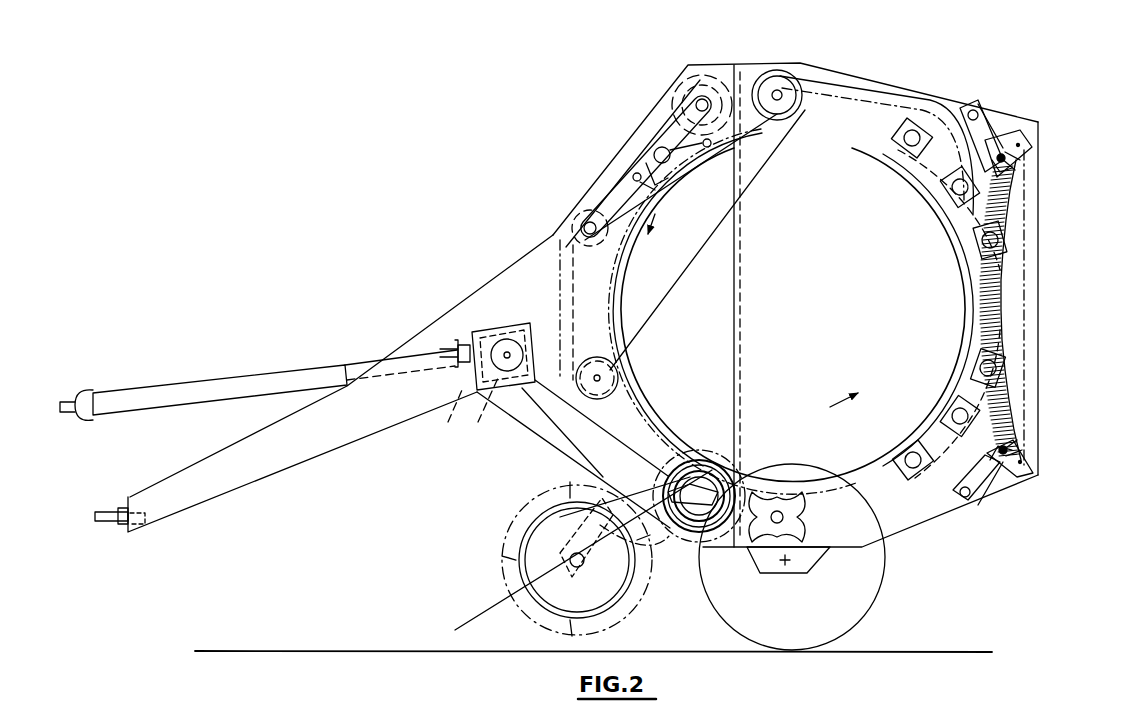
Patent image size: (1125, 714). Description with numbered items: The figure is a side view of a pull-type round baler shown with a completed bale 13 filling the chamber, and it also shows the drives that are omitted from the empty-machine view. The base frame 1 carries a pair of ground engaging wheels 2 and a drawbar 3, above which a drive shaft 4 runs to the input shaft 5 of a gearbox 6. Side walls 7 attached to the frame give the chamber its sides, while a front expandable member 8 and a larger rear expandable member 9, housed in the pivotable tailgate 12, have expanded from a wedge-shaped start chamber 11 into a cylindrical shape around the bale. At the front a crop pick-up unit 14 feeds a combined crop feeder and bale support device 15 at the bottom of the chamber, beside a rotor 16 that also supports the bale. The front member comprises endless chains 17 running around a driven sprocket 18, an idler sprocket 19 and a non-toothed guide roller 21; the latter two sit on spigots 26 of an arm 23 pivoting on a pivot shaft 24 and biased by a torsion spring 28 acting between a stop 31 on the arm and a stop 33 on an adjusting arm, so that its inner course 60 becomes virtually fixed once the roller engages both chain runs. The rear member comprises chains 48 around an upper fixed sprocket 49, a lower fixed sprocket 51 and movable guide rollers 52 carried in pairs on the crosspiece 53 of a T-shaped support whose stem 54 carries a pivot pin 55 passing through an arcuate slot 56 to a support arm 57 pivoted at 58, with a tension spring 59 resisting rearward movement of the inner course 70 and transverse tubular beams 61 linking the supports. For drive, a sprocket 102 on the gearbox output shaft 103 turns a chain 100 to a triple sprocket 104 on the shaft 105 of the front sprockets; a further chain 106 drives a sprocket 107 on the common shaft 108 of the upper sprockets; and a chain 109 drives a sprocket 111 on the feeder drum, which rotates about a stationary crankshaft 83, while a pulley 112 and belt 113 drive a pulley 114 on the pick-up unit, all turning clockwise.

The base frame 1 is at (902, 554).
The ground engaging wheels 2 is at (862, 605).
The drawbar 3 is at (350, 435).
The drive shaft 4 is at (240, 378).
The input shaft 5 is at (448, 421).
The gearbox 6 is at (480, 415).
The side walls 7 is at (738, 72).
The front expandable member 8 is at (557, 289).
The rear expandable member 9 is at (908, 100).
The bale start chamber 11 is at (868, 150).
The tailgate 12 is at (1038, 345).
The completed bale 13 is at (789, 290).
The crop pick-up unit 14 is at (560, 582).
The combined crop feeder and bale support device 15 is at (710, 462).
The rotor 16 is at (786, 484).
The endless chains 17 is at (605, 300).
The driven sprocket 18 is at (612, 380).
The idler sprocket 19 is at (698, 108).
The guide roller 21 is at (584, 222).
The arm 23 is at (620, 200).
The pivot shaft 24 is at (672, 152).
The spigots 26 is at (703, 103).
The torsion spring 28 is at (665, 163).
The stop 31 is at (640, 206).
The stop 33 is at (716, 156).
The endless chains 48 is at (958, 331).
The upper fixed sprocket 49 is at (788, 114).
The lower fixed sprocket 51 is at (765, 500).
The movable guide rollers 52 is at (900, 142).
The crosspiece 53 is at (937, 182).
The stem 54 is at (1035, 136).
The pivot pin 55 is at (1001, 157).
The arcuate slot 56 is at (1030, 165).
The support arm 57 is at (992, 150).
The pivot mounting 58 is at (972, 112).
The tension spring 59 is at (1015, 196).
The inner course 60 is at (626, 334).
The transverse tubular beams 61 is at (965, 216).
The inner course 70 is at (964, 300).
The crankshaft 83 is at (698, 505).
The chain 100 is at (545, 352).
The sprocket 102 is at (505, 352).
The output shaft 103 is at (490, 350).
The triple sprocket 104 is at (593, 384).
The shaft 105 is at (592, 380).
The chain 106 is at (670, 312).
The sprocket 107 is at (806, 106).
The common shaft 108 is at (779, 93).
The chain 109 is at (648, 472).
The sprocket 111 is at (712, 527).
The pulley 112 is at (702, 528).
The belt 113 is at (650, 545).
The pulley 114 is at (630, 600).